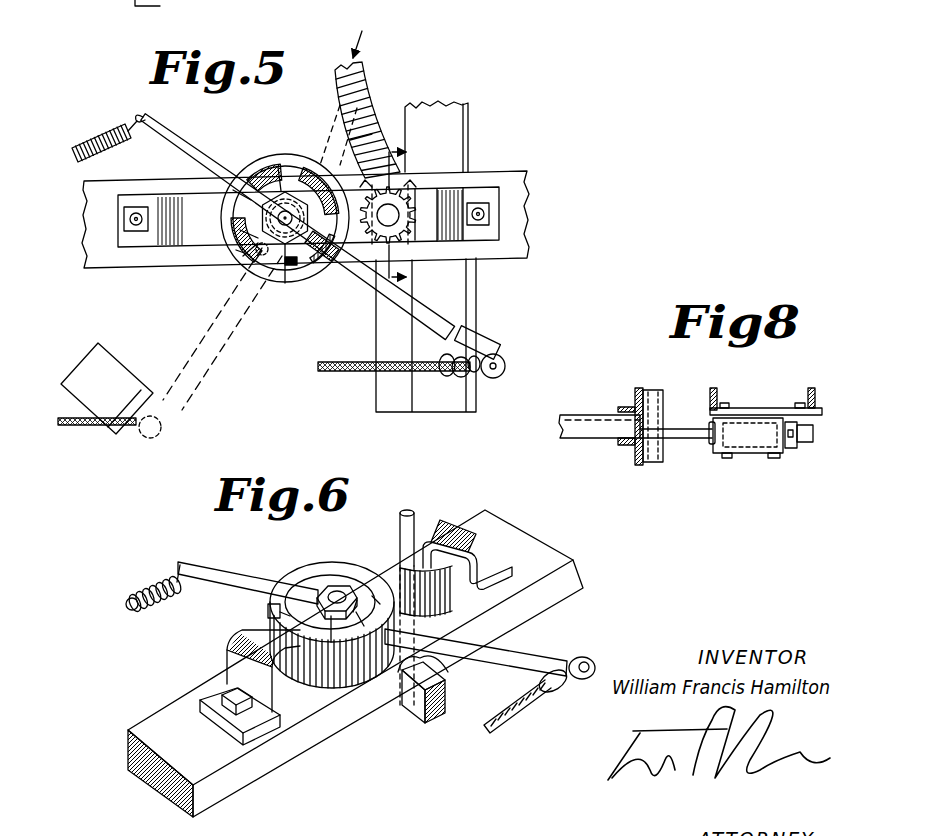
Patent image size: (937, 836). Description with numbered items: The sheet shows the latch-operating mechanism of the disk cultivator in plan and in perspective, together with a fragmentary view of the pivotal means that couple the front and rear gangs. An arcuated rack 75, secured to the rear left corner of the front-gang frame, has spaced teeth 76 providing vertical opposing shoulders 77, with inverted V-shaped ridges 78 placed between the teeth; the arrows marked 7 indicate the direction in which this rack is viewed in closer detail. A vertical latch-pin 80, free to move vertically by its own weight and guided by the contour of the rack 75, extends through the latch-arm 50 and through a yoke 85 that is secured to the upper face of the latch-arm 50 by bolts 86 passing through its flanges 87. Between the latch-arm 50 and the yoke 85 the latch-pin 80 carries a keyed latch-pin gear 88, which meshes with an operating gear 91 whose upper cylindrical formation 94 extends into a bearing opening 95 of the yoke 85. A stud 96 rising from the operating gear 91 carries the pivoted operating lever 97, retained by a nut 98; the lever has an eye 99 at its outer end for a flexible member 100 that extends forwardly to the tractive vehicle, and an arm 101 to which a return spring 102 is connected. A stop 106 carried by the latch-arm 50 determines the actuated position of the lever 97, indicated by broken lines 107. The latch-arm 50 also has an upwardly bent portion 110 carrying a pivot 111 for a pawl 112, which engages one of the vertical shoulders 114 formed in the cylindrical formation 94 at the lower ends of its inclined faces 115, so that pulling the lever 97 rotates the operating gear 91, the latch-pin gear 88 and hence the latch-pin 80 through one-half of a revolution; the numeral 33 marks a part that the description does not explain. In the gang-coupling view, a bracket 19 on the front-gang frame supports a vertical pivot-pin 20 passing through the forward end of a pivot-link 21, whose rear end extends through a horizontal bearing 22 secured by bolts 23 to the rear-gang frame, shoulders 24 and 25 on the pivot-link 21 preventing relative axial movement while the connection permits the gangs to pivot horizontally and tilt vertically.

In FIG. 5, the lever 33 is at (162, 8).
In FIG. 5, the latch-arm 50 is at (527, 236).
In FIG. 6, the latch-arm 50 is at (355, 663).
In FIG. 5, the arcuated rack 75 is at (397, 104).
In FIG. 5, the teeth 76 is at (356, 78).
In FIG. 5, the vertical opposing shoulders 77 is at (373, 101).
In FIG. 5, the inverted V-shaped ridges 78 is at (362, 32).
In FIG. 5, the section line 7- 7 is at (409, 212).
In FIG. 5, the latch-pin 80 is at (394, 210).
In FIG. 6, the latch-pin 80 is at (414, 520).
In FIG. 5, the yoke 85 is at (488, 189).
In FIG. 6, the yoke 85 is at (440, 540).
In FIG. 5, the bolts 86 is at (486, 213).
In FIG. 6, the bolts 86 is at (222, 700).
In FIG. 5, the flanges 87 is at (487, 194).
In FIG. 5, the latch-pin gear 88 is at (405, 186).
In FIG. 6, the latch-pin gear 88 is at (452, 601).
In FIG. 5, the cylindrical formation 94 is at (293, 167).
In FIG. 6, the cylindrical formation 94 is at (337, 572).
In FIG. 5, the bearing opening 95 is at (273, 161).
In FIG. 6, the bearing opening 95 is at (298, 578).
In FIG. 5, the stud 96 is at (263, 232).
In FIG. 5, the operating lever 97 is at (290, 243).
In FIG. 6, the operating lever 97 is at (528, 652).
In FIG. 5, the nut 98 is at (265, 222).
In FIG. 6, the nut 98 is at (330, 588).
In FIG. 5, the eye 99 is at (505, 363).
In FIG. 5, the flexible member 100 is at (352, 374).
In FIG. 5, the arm 101 is at (216, 166).
In FIG. 5, the return spring 102 is at (100, 137).
In FIG. 6, the return spring 102 is at (141, 592).
In FIG. 5, the stop 106 is at (118, 383).
In FIG. 5, the broken lines 107 is at (186, 398).
In FIG. 6, the upwardly bent portion 110 is at (372, 594).
In FIG. 5, the pivot 111 is at (333, 260).
In FIG. 6, the pivot 111 is at (416, 585).
In FIG. 6, the pawl 112 is at (356, 598).
In FIG. 6, the vertical shoulders 114 is at (268, 609).
In FIG. 6, the inclined faces 115 is at (286, 620).
In FIG. 6, the operating gear 91 is at (353, 704).
In FIG. 8, the bracket 19 is at (655, 387).
In FIG. 8, the vertical pivot-pin 20 is at (657, 422).
In FIG. 8, the pivot-link 21 is at (685, 440).
In FIG. 8, the horizontal bearing 22 is at (750, 447).
In FIG. 8, the bolts 23 is at (770, 408).
In FIG. 8, the shoulder 24 is at (713, 444).
In FIG. 8, the shoulder 25 is at (795, 448).